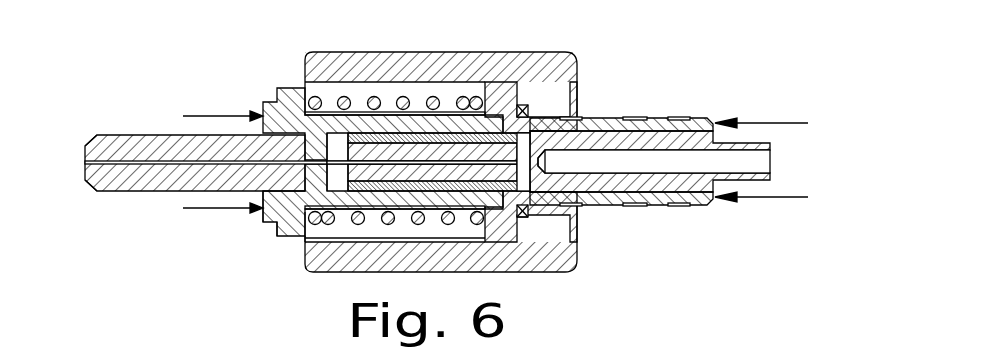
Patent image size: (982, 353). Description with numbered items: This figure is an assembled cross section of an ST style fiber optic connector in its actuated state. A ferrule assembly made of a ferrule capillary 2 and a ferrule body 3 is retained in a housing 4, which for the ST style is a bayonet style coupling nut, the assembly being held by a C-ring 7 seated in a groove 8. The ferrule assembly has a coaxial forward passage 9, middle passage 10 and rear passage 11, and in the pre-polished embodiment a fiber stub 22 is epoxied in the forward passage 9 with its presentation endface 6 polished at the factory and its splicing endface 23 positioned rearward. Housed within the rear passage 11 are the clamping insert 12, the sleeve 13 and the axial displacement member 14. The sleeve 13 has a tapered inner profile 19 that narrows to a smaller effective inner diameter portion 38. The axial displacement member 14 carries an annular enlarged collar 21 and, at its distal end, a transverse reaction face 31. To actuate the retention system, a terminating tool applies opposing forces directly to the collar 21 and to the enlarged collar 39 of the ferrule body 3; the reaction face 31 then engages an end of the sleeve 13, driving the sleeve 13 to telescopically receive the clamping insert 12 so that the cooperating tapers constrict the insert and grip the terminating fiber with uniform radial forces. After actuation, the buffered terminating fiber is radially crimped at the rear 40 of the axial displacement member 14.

The ferrule capillary 2 is at (103, 147).
The ferrule body 3 is at (293, 220).
The housing 4 is at (312, 63).
The presentation endface 6 is at (85, 164).
The C-ring 7 is at (523, 213).
The groove 8 is at (527, 207).
The forward passage 9 is at (85, 160).
The middle passage 10 is at (322, 153).
The rear passage 11 is at (327, 157).
The clamping insert 12 is at (360, 138).
The sleeve 13 is at (450, 143).
The axial displacement member 14 is at (672, 142).
The inner profile 19 is at (395, 152).
The collar 21 is at (703, 117).
The fiber stub 22 is at (153, 160).
The splicing endface 23 is at (428, 163).
The reaction face 31 is at (530, 108).
The smaller effective inner diameter portion 38 is at (523, 140).
The enlarged collar 39 is at (268, 218).
The rear 40 is at (764, 143).